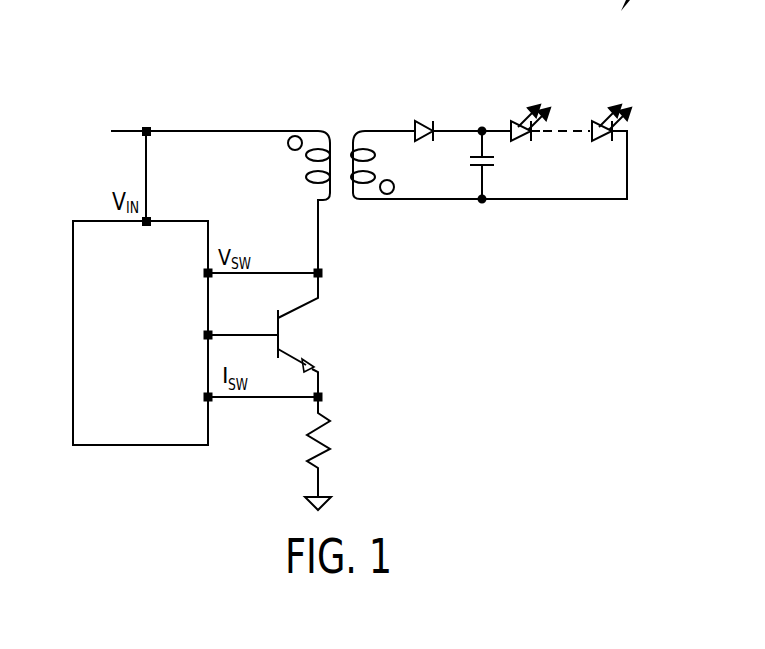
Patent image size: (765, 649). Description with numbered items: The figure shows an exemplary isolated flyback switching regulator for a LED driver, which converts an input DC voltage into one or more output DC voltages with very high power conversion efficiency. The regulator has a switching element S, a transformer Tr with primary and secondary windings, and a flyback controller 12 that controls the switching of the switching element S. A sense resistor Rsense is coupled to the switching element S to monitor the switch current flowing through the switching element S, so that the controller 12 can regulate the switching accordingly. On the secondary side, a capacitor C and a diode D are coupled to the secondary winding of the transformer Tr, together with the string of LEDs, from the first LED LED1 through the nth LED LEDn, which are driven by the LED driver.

The controller 12 is at (73, 331).
The transformer Tr is at (381, 185).
The diode D is at (433, 120).
The capacitor C is at (474, 165).
The LED 1 LED1 is at (528, 107).
The LED n LEDn is at (608, 107).
The switching element S is at (305, 335).
The sense resistor Rsense is at (345, 453).